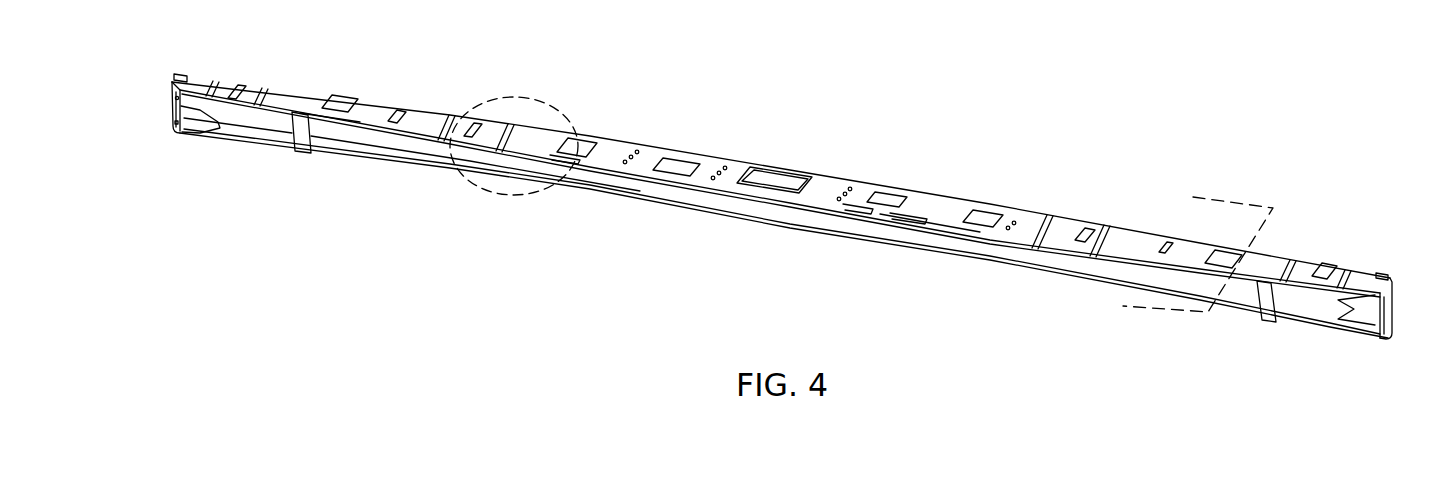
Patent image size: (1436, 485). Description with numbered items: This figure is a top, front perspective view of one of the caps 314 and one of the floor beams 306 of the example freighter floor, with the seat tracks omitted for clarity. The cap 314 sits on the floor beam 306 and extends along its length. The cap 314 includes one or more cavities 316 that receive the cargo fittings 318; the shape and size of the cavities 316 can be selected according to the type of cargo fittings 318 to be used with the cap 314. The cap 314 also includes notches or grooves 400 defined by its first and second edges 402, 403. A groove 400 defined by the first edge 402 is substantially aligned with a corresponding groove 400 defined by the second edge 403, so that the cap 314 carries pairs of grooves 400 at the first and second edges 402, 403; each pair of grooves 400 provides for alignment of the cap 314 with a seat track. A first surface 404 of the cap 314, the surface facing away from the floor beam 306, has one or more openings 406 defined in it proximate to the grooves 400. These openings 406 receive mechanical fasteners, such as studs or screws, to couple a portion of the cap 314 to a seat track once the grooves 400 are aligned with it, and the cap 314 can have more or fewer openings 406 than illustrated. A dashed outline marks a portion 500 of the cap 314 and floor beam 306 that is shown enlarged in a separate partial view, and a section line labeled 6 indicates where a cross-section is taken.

The cap 314 is at (239, 66).
The cavities 316 is at (387, 85).
The floor beam 306 is at (316, 147).
The portion 500 is at (529, 136).
The first surface 404 is at (732, 160).
The cargo fittings 318 is at (989, 206).
The grooves 400 is at (772, 214).
The first edge 402 is at (903, 240).
The second edge 403 is at (1001, 199).
The openings 406 is at (1059, 206).
The section line 6- 6 is at (1184, 248).